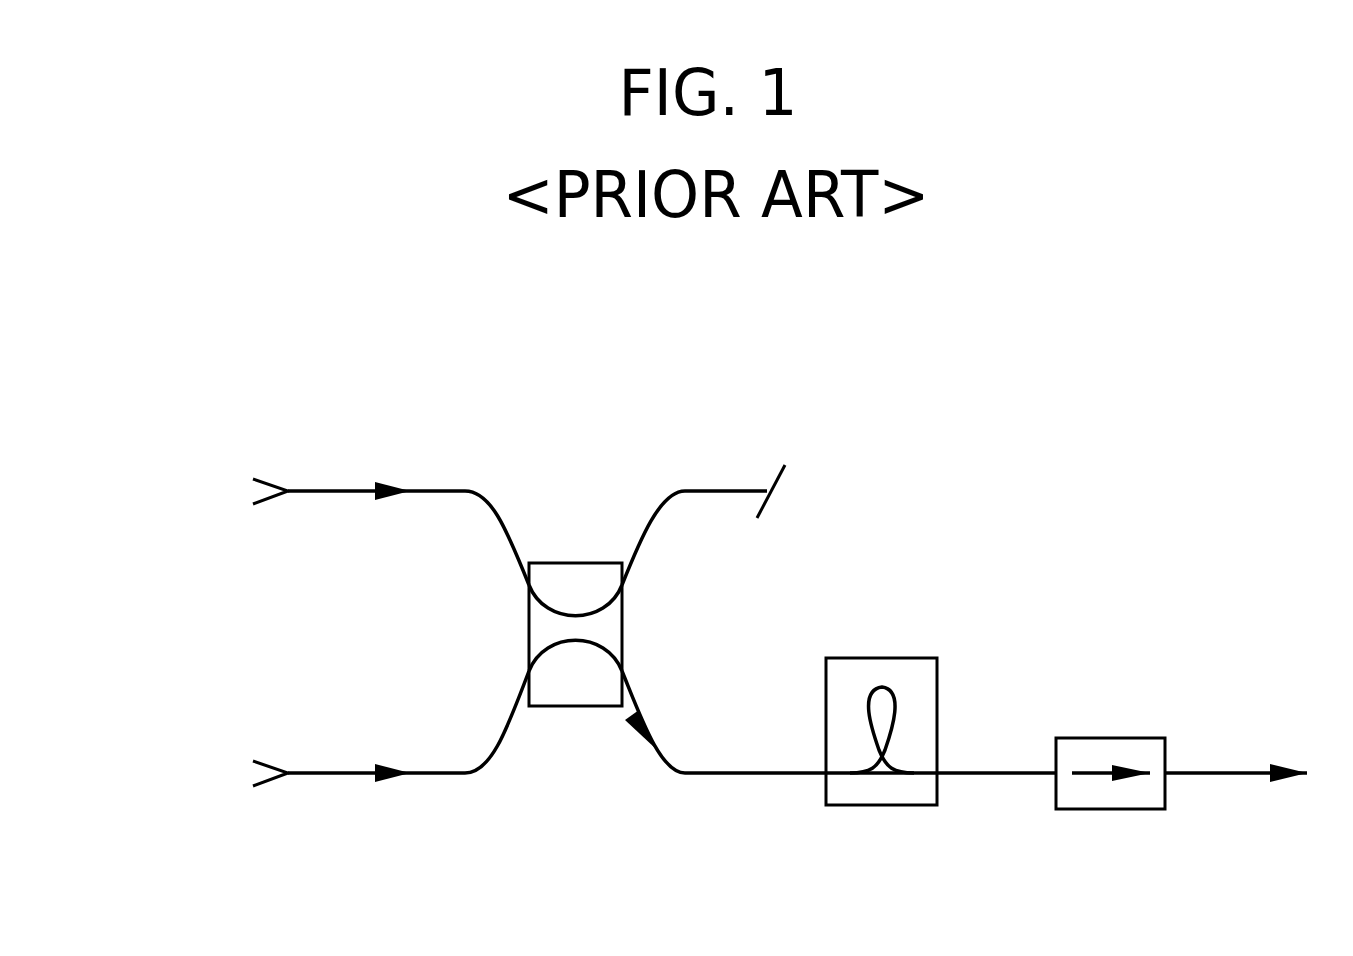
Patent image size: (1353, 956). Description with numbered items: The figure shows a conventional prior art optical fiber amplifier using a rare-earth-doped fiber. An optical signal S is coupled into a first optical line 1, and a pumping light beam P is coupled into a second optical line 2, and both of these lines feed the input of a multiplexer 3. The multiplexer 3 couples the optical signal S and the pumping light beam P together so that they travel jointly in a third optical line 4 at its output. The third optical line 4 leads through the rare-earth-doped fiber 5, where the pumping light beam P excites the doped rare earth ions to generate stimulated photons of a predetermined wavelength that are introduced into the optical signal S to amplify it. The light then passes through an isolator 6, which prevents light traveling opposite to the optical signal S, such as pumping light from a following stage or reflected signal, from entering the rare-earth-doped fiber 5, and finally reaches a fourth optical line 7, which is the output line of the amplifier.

The first optical line 1 is at (335, 777).
The second optical line 2 is at (333, 489).
The multiplexer 3 is at (566, 708).
The third optical line 4 is at (760, 777).
The rare-earth-doped fiber 5 is at (888, 657).
The isolator 6 is at (1110, 737).
The fourth optical line 7 is at (1229, 771).